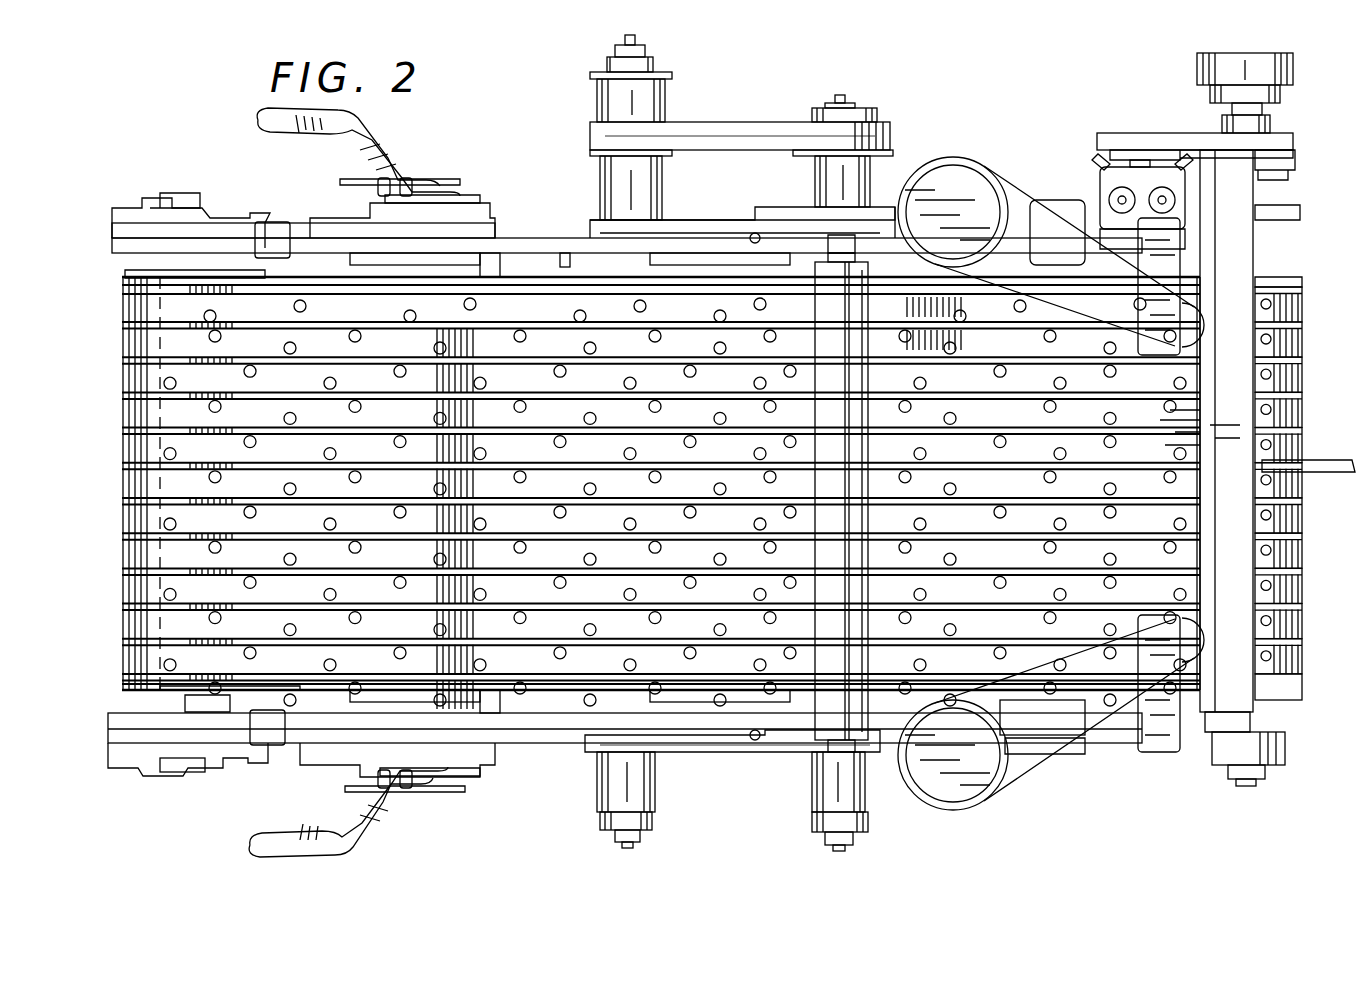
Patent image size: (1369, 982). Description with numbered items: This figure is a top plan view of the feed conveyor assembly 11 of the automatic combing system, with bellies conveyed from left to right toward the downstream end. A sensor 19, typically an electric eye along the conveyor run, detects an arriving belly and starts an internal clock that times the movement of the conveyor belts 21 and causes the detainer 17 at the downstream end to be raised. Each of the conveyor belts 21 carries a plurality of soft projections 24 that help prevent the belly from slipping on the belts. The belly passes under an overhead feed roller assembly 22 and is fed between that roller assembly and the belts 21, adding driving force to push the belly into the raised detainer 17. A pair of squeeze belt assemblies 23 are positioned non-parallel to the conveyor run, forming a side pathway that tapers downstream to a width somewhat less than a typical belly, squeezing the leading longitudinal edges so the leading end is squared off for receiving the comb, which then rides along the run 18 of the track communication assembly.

The feed conveyor assembly 11 is at (895, 92).
The detainer 17 is at (1230, 700).
The run 18 is at (1335, 456).
The sensor 19 is at (755, 233).
The conveyor belts 21 is at (128, 372).
The overhead feed roller assembly 22 is at (838, 518).
The squeeze belt assemblies 23 is at (998, 180).
The soft projections 24 is at (155, 486).